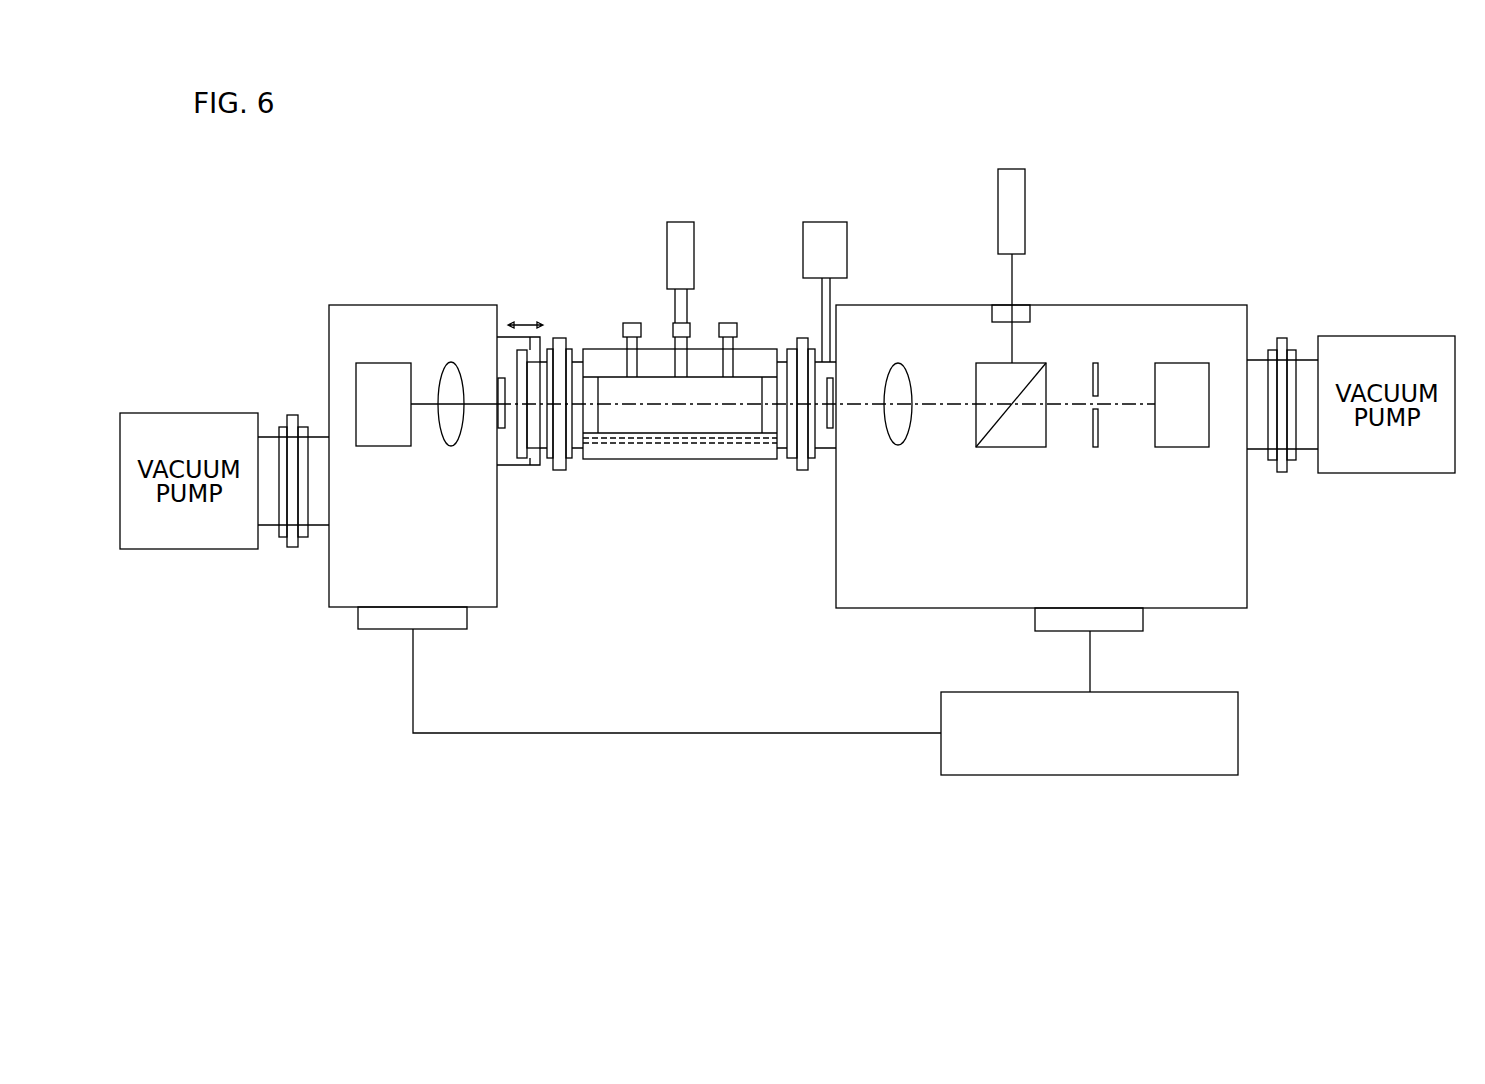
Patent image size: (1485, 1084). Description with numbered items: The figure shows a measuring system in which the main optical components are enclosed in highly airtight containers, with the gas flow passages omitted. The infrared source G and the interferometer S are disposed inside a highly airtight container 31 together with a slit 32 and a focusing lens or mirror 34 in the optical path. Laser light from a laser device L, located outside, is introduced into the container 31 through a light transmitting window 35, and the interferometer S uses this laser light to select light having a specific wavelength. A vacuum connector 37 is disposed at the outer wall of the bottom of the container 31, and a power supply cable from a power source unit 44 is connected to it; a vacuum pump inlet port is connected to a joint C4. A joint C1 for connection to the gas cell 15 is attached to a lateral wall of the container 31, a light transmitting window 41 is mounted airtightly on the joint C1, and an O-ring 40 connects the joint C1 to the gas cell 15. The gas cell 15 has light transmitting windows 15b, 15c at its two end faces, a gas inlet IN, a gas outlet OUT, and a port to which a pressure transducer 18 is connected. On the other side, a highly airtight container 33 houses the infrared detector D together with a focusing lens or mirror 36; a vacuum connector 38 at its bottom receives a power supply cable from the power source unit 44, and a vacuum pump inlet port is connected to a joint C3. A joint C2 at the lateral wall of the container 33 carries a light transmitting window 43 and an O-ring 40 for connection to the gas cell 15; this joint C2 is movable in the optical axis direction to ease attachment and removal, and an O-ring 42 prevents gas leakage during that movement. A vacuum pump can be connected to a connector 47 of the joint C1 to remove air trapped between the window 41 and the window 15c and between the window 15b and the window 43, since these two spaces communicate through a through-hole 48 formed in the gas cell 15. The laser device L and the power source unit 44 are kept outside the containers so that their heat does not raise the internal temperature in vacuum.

The highly airtight container 33 is at (410, 305).
The highly airtight container 31 is at (1170, 305).
The O-ring 40 is at (292, 420).
The joint C1 is at (787, 478).
The joint C2 is at (547, 478).
The joint C3 is at (279, 554).
The joint C4 is at (1268, 476).
The gas cell 15 is at (697, 460).
The light transmitting window 15b is at (590, 378).
The light transmitting window 15c is at (770, 385).
The through-hole 48 is at (633, 443).
The pressure transducer 18 is at (680, 220).
The gas inlet IN is at (632, 320).
The gas outlet OUT is at (730, 320).
The connector 47 is at (825, 220).
The light transmitting window 41 is at (830, 430).
The O-ring 42 is at (527, 458).
The light transmitting window 43 is at (500, 430).
The infrared detector D is at (385, 447).
The focusing lens or mirror 36 is at (451, 447).
The focusing lens or mirror 34 is at (898, 447).
The interferometer S is at (1011, 447).
The slit 32 is at (1096, 447).
The infrared source G is at (1182, 447).
The laser device L is at (1012, 168).
The light transmitting window 35 is at (1002, 310).
The vacuum connector 37 is at (1107, 615).
The vacuum connector 38 is at (383, 630).
The power source unit 44 is at (1195, 700).